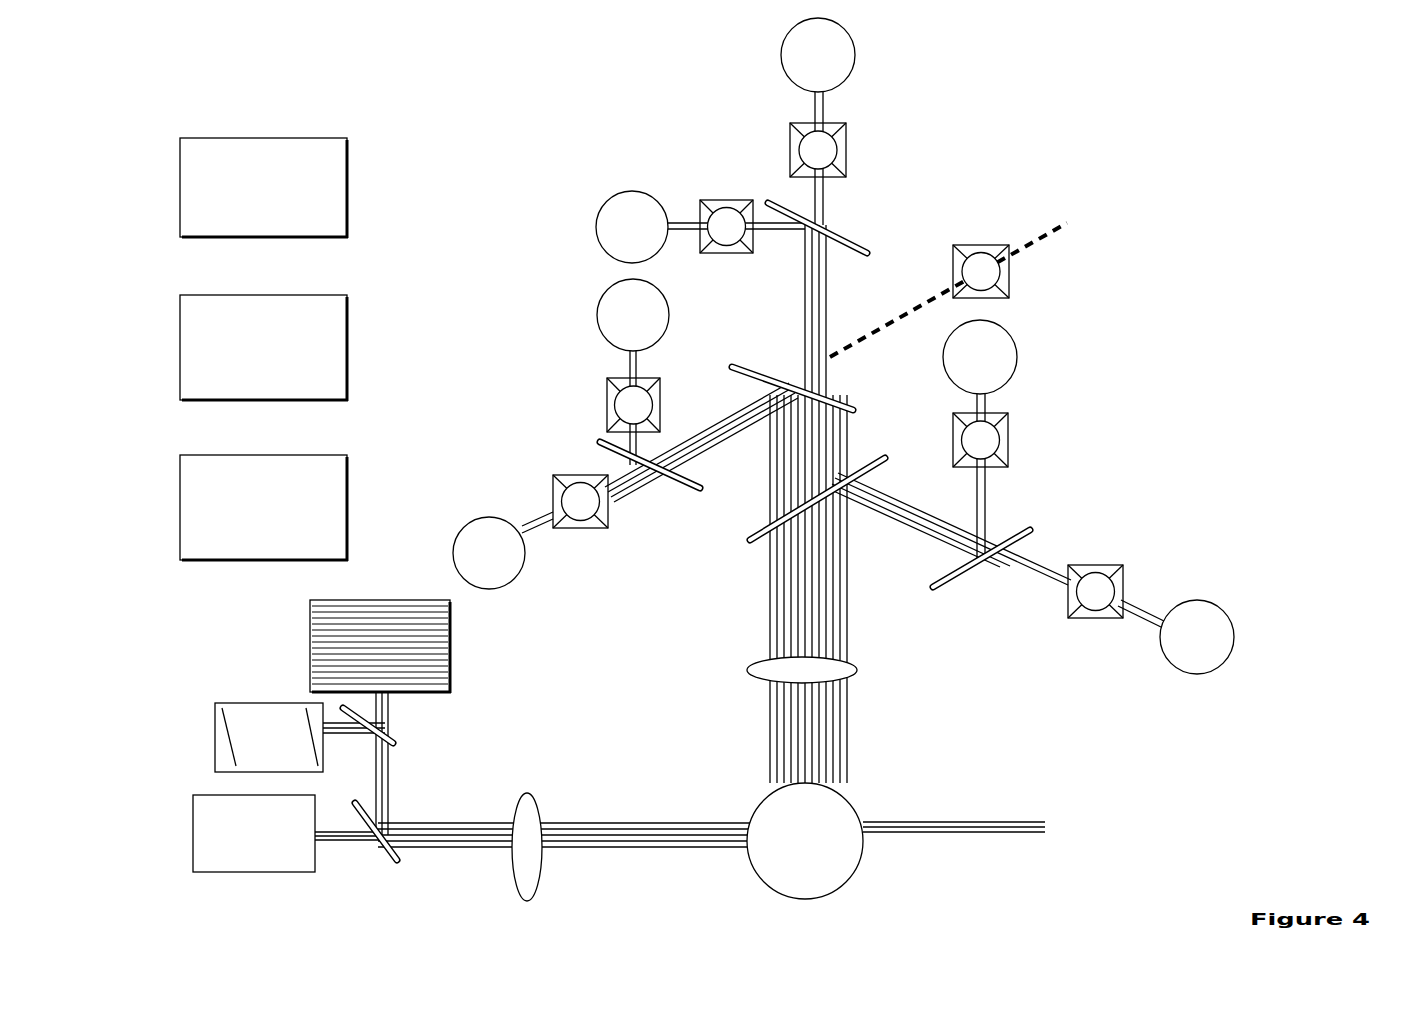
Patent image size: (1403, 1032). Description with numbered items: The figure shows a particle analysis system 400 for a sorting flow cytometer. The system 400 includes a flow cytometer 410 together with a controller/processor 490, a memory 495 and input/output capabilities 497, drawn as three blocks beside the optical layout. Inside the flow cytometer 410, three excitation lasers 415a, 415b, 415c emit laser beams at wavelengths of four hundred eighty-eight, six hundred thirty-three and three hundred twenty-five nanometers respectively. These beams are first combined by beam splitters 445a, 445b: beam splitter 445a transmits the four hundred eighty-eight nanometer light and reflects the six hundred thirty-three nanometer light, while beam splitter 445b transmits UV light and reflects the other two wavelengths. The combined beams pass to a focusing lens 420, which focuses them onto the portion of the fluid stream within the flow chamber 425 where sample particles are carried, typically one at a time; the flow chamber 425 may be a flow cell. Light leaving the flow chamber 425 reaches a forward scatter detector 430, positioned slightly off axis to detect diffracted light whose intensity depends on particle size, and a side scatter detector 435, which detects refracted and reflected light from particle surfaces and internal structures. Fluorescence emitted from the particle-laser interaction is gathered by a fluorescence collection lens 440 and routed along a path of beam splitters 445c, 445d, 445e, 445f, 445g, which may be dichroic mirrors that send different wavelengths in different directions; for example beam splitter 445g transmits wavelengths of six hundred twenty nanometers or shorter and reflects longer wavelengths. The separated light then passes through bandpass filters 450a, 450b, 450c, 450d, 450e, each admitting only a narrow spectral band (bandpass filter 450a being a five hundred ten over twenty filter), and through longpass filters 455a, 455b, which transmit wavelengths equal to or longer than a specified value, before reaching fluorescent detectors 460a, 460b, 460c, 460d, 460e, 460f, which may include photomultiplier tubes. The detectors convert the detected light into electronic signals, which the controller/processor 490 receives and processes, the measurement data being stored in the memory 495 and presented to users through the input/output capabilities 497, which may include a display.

The particle analysis system 400 is at (525, 72).
The flow cytometer 410 is at (1040, 108).
The excitation laser 415a is at (312, 600).
The excitation laser 415b is at (220, 703).
The excitation laser 415c is at (194, 795).
The focusing lens 420 is at (540, 800).
The flow chamber 425 is at (856, 805).
The forward scatter detector 430 is at (1080, 855).
The side scatter detector 435 is at (1128, 188).
The fluorescence collection lens 440 is at (752, 682).
The beam splitter 445a is at (396, 722).
The beam splitter 445b is at (358, 806).
The beam splitter 445c is at (748, 548).
The beam splitter 445d is at (936, 594).
The beam splitter 445e is at (752, 363).
The beam splitter 445f is at (862, 260).
The beam splitter 445g is at (690, 496).
The bandpass filter 450a is at (552, 492).
The bandpass filter 450b is at (733, 256).
The bandpass filter 450c is at (842, 124).
The bandpass filter 450d is at (1012, 282).
The bandpass filter 450e is at (1010, 420).
The longpass filter 455a is at (606, 386).
The longpass filter 455b is at (1125, 578).
The fluorescent detector 460a is at (597, 222).
The fluorescent detector 460b is at (852, 42).
The fluorescent detector 460c is at (1234, 632).
The fluorescent detector 460d is at (455, 548).
The fluorescent detector 460e is at (598, 307).
The fluorescent detector 460f is at (1018, 357).
The controller/processor 490 is at (333, 295).
The memory 495 is at (333, 137).
The input/output capabilities 497 is at (333, 455).